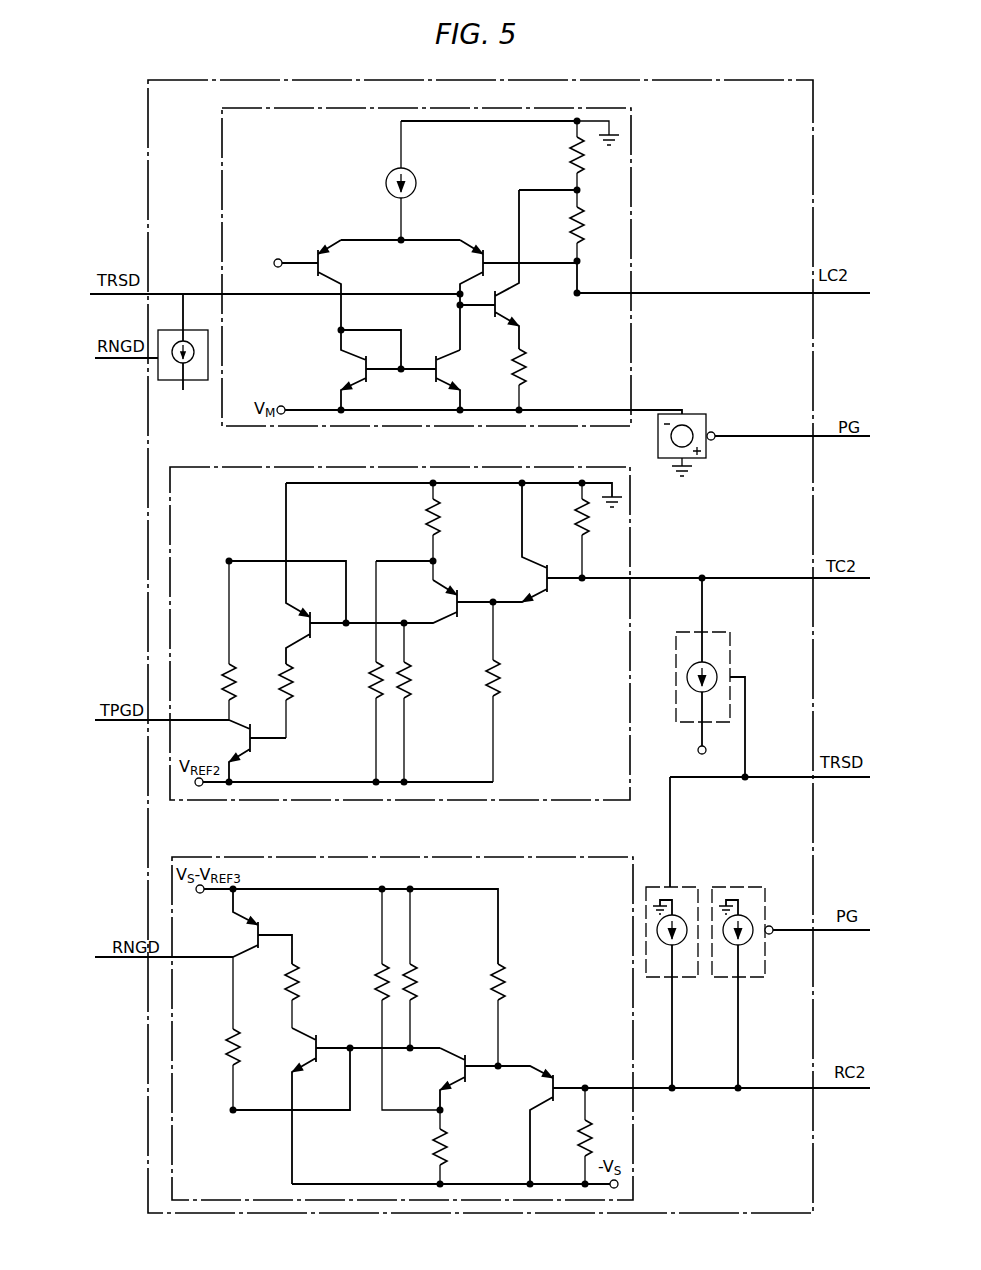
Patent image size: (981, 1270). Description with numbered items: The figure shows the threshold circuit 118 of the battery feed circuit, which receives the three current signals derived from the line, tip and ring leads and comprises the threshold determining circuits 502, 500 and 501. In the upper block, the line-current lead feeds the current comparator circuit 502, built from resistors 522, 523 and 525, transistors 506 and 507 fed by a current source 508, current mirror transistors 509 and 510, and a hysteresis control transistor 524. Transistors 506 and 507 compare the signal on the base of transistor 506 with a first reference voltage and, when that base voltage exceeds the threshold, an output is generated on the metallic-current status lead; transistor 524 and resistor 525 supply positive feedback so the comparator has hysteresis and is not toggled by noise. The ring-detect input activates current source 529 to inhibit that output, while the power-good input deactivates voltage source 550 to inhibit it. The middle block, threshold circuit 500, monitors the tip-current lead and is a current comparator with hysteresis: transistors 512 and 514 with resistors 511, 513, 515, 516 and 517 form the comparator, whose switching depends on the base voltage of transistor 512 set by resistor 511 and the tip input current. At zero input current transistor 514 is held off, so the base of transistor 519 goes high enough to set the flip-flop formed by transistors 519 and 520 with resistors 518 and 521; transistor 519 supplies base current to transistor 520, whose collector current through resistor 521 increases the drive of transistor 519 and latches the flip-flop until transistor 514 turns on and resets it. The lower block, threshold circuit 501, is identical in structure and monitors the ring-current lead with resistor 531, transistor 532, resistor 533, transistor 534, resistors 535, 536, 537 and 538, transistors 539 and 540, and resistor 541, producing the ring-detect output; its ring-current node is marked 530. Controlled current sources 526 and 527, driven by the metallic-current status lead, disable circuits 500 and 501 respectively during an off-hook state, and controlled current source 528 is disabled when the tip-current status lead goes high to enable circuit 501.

The threshold circuit 118 is at (489, 62).
The current comparator circuit 502 is at (222, 128).
The threshold circuit 500 is at (411, 446).
The threshold circuit 501 is at (409, 836).
The transistor 506 is at (502, 295).
The transistor 507 is at (348, 285).
The current source 508 is at (408, 179).
The current mirror transistor 509 is at (455, 380).
The current mirror transistor 510 is at (357, 370).
The resistor 511 is at (567, 530).
The transistor 512 is at (519, 544).
The resistor 513 is at (511, 692).
The transistor 514 is at (385, 601).
The resistor 515 is at (451, 531).
The resistor 516 is at (422, 702).
The resistor 517 is at (360, 671).
The resistor 518 is at (273, 701).
The transistor 519 is at (286, 573).
The transistor 520 is at (237, 751).
The resistor 521 is at (215, 640).
The resistor 522 is at (595, 155).
The resistor 523 is at (595, 225).
The hysteresis control transistor 524 is at (513, 269).
The resistor 525 is at (537, 379).
The controlled current source 526 is at (708, 632).
The controlled current source 527 is at (678, 887).
The controlled current source 528 is at (732, 887).
The current source 529 is at (178, 330).
The node 530 is at (738, 1092).
The resistor 531 is at (569, 1136).
The transistor 532 is at (541, 1125).
The resistor 533 is at (516, 1015).
The transistor 534 is at (453, 1079).
The resistor 535 is at (459, 1147).
The resistor 536 is at (390, 999).
The resistor 537 is at (428, 968).
The resistor 538 is at (276, 996).
The transistor 539 is at (353, 1106).
The transistor 540 is at (247, 926).
The resistor 541 is at (218, 1033).
The voltage source 550 is at (691, 412).